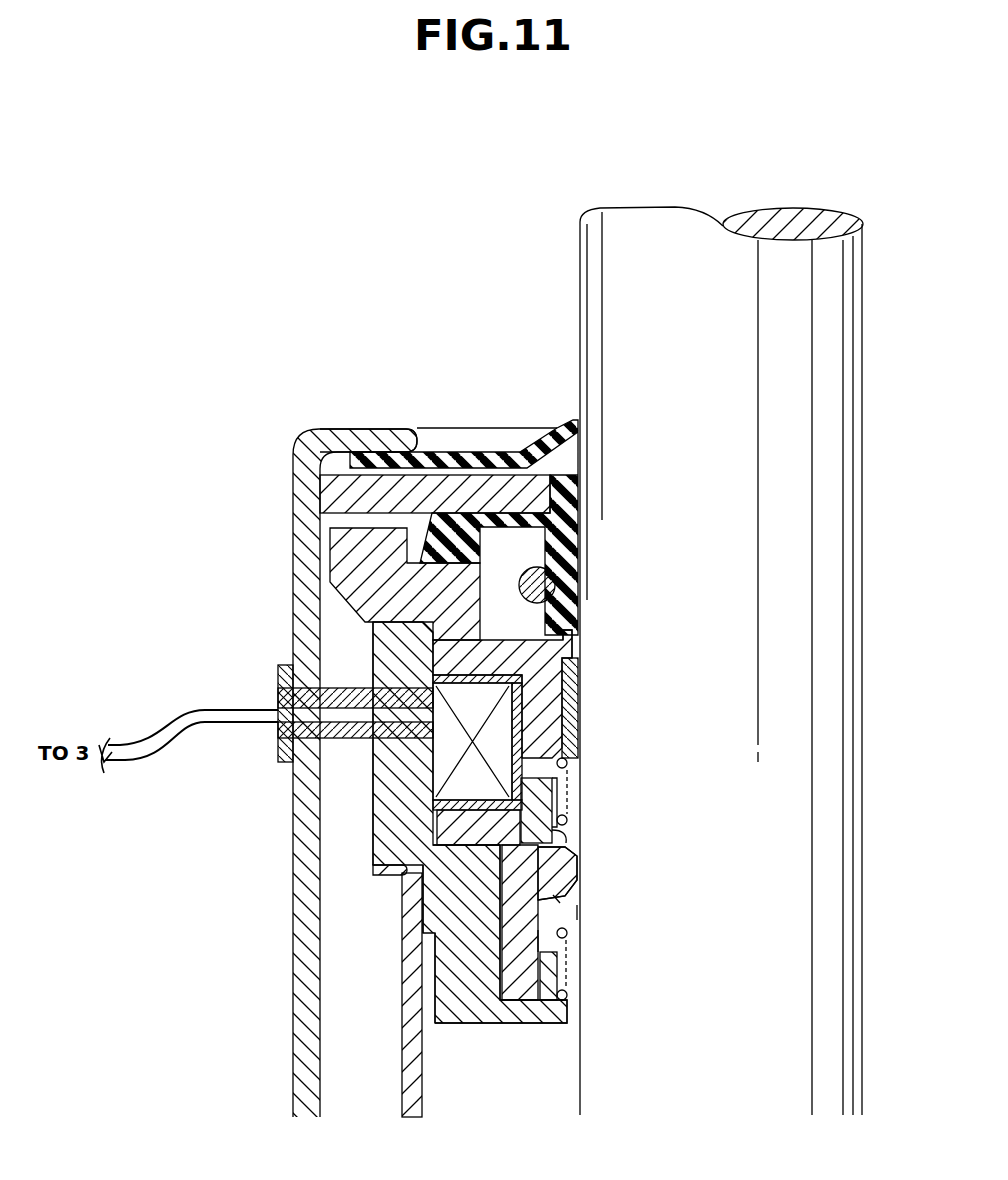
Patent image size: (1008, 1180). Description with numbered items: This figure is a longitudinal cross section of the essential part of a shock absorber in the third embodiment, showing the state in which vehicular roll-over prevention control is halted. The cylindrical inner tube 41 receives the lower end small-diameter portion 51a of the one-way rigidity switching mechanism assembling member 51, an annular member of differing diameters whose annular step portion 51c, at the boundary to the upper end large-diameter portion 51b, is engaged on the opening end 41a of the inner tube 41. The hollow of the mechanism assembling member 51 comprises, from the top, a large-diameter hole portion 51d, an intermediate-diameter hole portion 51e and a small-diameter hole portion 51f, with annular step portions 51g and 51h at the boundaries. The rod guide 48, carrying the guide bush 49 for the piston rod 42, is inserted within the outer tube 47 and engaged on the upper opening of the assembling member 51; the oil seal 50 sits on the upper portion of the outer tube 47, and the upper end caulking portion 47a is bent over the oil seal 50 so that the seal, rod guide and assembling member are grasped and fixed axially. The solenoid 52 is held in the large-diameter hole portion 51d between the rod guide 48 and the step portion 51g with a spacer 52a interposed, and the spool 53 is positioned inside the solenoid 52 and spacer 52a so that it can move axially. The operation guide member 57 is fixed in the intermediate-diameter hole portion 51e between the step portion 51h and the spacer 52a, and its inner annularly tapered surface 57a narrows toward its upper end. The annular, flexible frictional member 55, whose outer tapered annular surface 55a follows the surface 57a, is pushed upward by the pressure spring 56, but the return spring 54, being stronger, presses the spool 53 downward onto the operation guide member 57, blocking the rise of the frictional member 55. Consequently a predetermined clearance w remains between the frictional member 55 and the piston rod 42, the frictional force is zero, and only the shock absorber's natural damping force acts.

The cylindrical tube (inner tube) 41 is at (412, 1105).
The opening end 41a is at (373, 868).
The piston rod 42 is at (837, 773).
The outer tube 47 is at (307, 1088).
The upper end caulking portion 47a is at (362, 438).
The rod guide 48 is at (358, 562).
The guide bush 49 is at (578, 702).
The oil seal 50 is at (460, 497).
The one-way rigidity switching mechanism assembling member 51 is at (447, 772).
The lower end small-diameter portion 51a is at (515, 960).
The upper end large-diameter portion 51b is at (375, 652).
The annular step portion 51c is at (443, 910).
The large-diameter hole portion 51d is at (575, 636).
The intermediate-diameter hole portion 51e is at (555, 933).
The small-diameter hole portion 51f is at (573, 1010).
The annular step portion 51g is at (470, 845).
The annular step portion 51h is at (445, 1012).
The solenoid 52 is at (512, 792).
The spacer 52a is at (480, 810).
The spool 53 is at (556, 808).
The return spring 54 is at (568, 781).
The frictional member 55 is at (560, 903).
The tapered annular surface 55a is at (553, 895).
The pressure spring 56 is at (573, 975).
The operation guide member 57 is at (520, 990).
The annularly tapered surface 57a is at (560, 873).
The predetermined clearance w is at (580, 917).